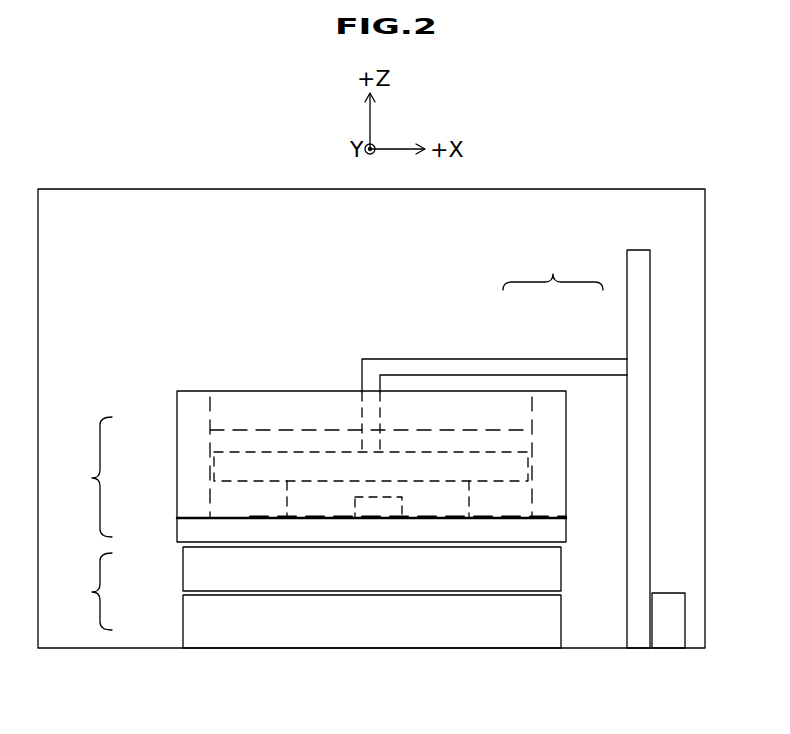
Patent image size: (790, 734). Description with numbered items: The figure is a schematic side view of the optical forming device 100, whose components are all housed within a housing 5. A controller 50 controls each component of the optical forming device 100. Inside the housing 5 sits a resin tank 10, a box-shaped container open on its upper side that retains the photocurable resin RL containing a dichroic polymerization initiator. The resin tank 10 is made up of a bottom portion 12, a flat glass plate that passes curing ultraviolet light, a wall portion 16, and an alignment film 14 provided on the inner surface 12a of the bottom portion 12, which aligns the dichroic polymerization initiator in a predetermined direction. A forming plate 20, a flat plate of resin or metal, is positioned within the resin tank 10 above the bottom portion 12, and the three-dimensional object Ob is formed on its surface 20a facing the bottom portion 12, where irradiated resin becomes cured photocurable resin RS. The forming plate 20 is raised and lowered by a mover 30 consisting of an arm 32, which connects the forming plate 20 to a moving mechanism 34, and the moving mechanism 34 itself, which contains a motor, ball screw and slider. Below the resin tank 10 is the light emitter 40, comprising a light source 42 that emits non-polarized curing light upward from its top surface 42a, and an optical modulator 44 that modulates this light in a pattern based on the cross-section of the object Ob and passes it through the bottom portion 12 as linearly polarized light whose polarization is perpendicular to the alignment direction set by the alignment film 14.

The optical forming device 100 is at (110, 151).
The housing 5 is at (638, 189).
The resin tank 10 is at (314, 546).
The bottom portion 12 is at (177, 525).
The inner surface 12a is at (260, 518).
The alignment film 14 is at (228, 518).
The wall portion 16 is at (177, 428).
The forming plate 20 is at (535, 453).
The surface 20a is at (487, 479).
The mover 30 is at (553, 267).
The arm 32 is at (528, 358).
The moving mechanism 34 is at (627, 347).
The light emitter 40 is at (312, 624).
The light source 42 is at (183, 615).
The top surface 42a is at (420, 596).
The optical modulator 44 is at (183, 563).
The controller 50 is at (667, 593).
The photocurable resin RL is at (277, 437).
The three-dimensional object Ob is at (450, 507).
The cured photocurable resin RS is at (455, 517).